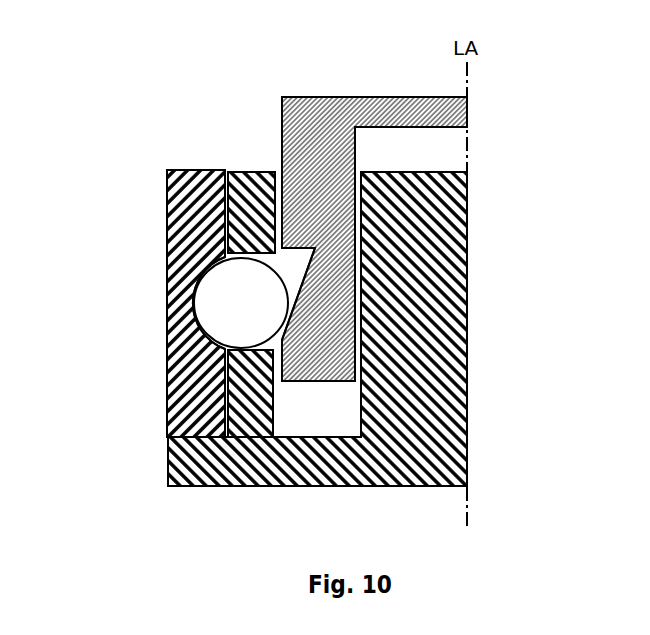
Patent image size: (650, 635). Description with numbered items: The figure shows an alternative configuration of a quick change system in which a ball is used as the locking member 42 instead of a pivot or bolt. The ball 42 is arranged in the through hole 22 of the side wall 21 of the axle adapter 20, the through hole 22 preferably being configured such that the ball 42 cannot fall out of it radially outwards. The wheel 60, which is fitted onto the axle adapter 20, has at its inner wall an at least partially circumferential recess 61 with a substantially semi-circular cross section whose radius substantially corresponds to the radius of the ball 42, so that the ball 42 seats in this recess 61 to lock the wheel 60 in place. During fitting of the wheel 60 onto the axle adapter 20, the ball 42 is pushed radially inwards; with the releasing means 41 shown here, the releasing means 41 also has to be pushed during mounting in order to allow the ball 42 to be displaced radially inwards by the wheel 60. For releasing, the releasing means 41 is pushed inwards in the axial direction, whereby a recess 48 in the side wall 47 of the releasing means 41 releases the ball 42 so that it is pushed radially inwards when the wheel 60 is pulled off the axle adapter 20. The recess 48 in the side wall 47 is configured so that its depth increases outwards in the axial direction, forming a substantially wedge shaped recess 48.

The axle adapter 20 is at (477, 428).
The side wall 21 is at (226, 164).
The through hole 22 is at (250, 351).
The releasing means 41 is at (272, 91).
The locking member (ball) 42 is at (202, 297).
The side wall 47 is at (339, 222).
The recess 48 is at (320, 269).
The wheel 60 is at (157, 197).
The recess 61 is at (180, 333).